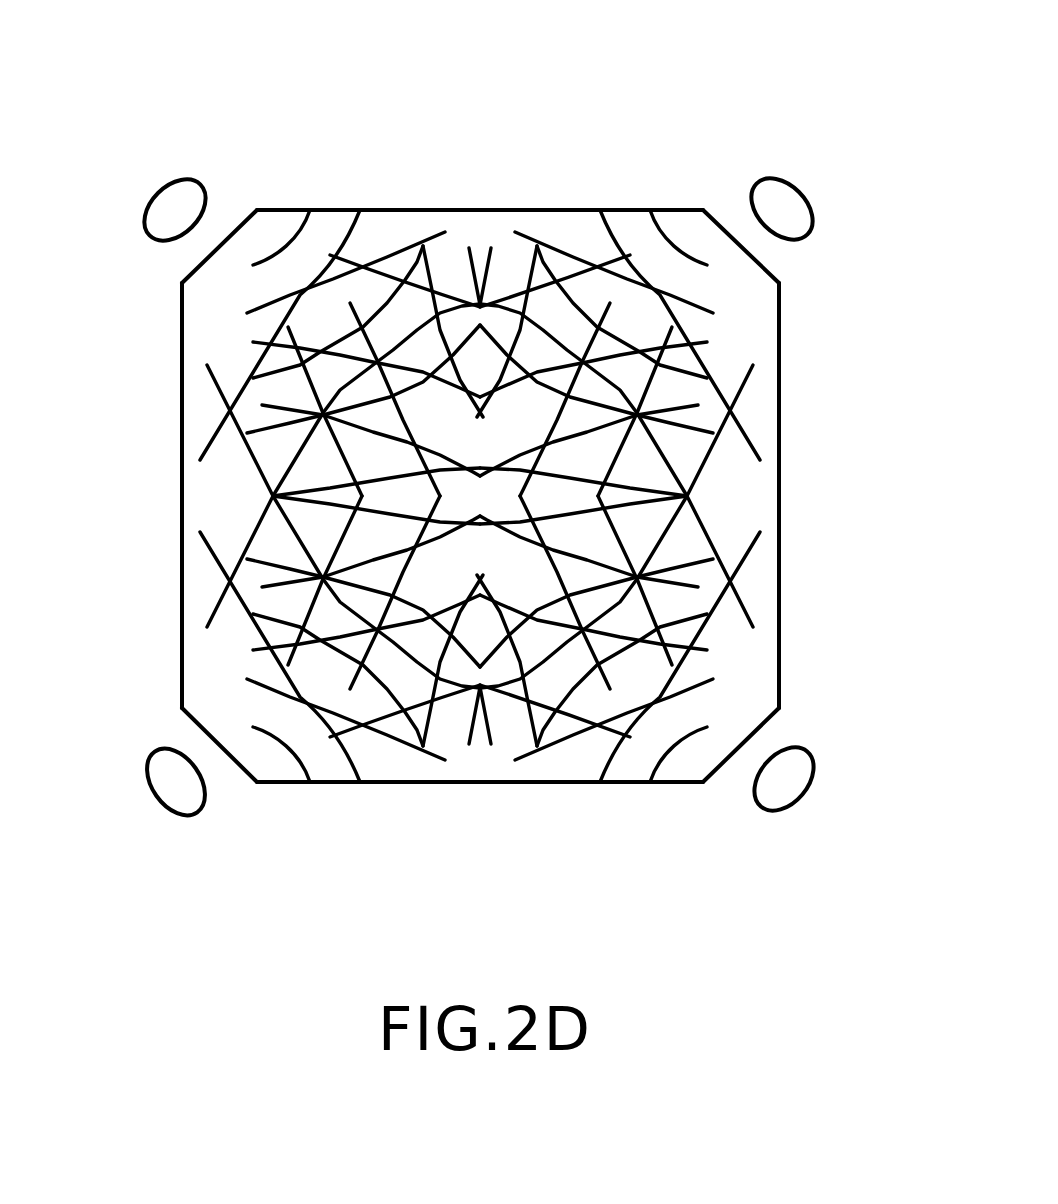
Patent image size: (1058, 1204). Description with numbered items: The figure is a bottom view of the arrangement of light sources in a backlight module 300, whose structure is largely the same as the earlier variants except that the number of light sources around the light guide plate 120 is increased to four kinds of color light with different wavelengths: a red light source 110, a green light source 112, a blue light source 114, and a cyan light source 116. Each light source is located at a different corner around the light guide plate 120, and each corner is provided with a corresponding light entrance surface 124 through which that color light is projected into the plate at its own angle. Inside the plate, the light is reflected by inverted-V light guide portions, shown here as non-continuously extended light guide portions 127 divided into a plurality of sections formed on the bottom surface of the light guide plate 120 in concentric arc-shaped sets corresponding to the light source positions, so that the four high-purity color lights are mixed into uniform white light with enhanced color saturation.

The backlight module 300 is at (605, 118).
The red light source 110 is at (160, 770).
The green light source 112 is at (797, 775).
The blue light source 114 is at (797, 204).
The cyan light source 116 is at (158, 200).
The light guide plate 120 is at (755, 490).
The light entrance surface 124 is at (183, 283).
The non-continuously extended inverted-V light guide portion 127 is at (208, 428).